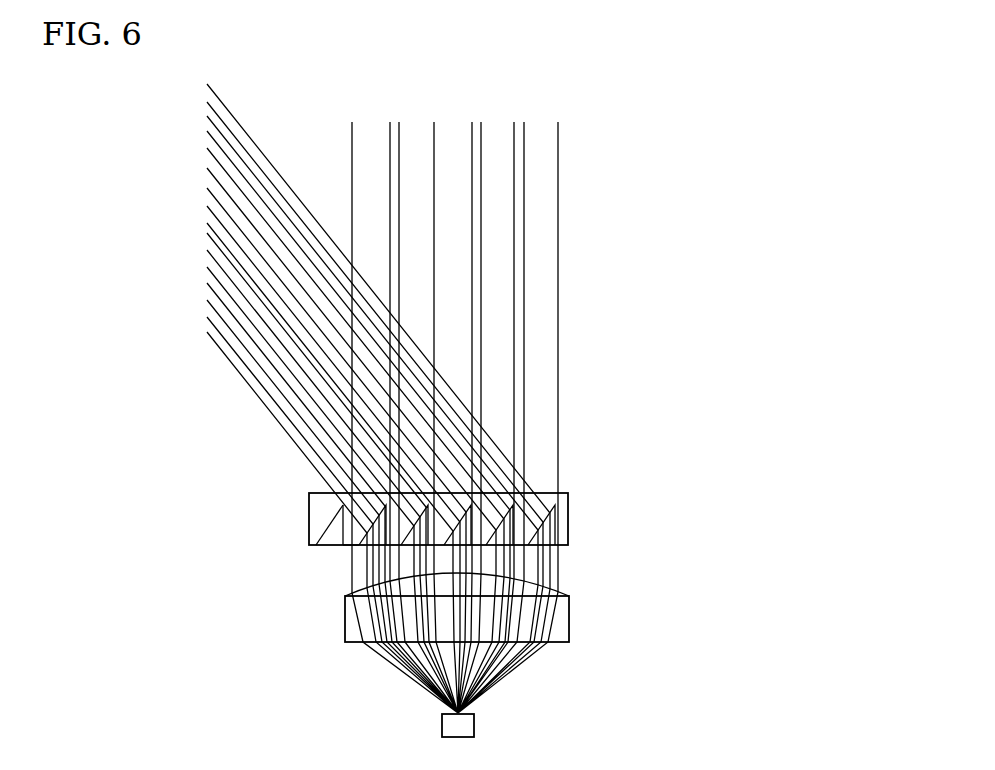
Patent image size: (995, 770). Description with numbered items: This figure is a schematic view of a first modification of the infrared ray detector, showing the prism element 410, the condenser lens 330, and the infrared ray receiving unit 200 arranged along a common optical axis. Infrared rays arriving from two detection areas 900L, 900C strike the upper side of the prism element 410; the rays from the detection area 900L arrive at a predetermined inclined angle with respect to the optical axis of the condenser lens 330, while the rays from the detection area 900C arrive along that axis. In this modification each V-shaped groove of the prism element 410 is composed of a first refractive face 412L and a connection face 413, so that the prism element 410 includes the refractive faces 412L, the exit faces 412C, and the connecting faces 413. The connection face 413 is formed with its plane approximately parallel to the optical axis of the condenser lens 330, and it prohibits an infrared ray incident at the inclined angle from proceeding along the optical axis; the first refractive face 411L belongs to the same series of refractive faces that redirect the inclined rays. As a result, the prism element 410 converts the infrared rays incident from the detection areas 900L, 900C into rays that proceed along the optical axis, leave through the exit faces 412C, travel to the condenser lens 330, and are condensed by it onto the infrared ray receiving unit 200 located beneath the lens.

The detection area 900L is at (340, 314).
The detection area 900C is at (455, 308).
The prism element 410 is at (568, 503).
The first refractive face 411L is at (542, 537).
The first refractive face 412L is at (332, 538).
The connection face 413 is at (343, 535).
The exit face 412C is at (356, 548).
The condenser lens 330 is at (569, 626).
The infrared ray receiving unit 200 is at (474, 724).